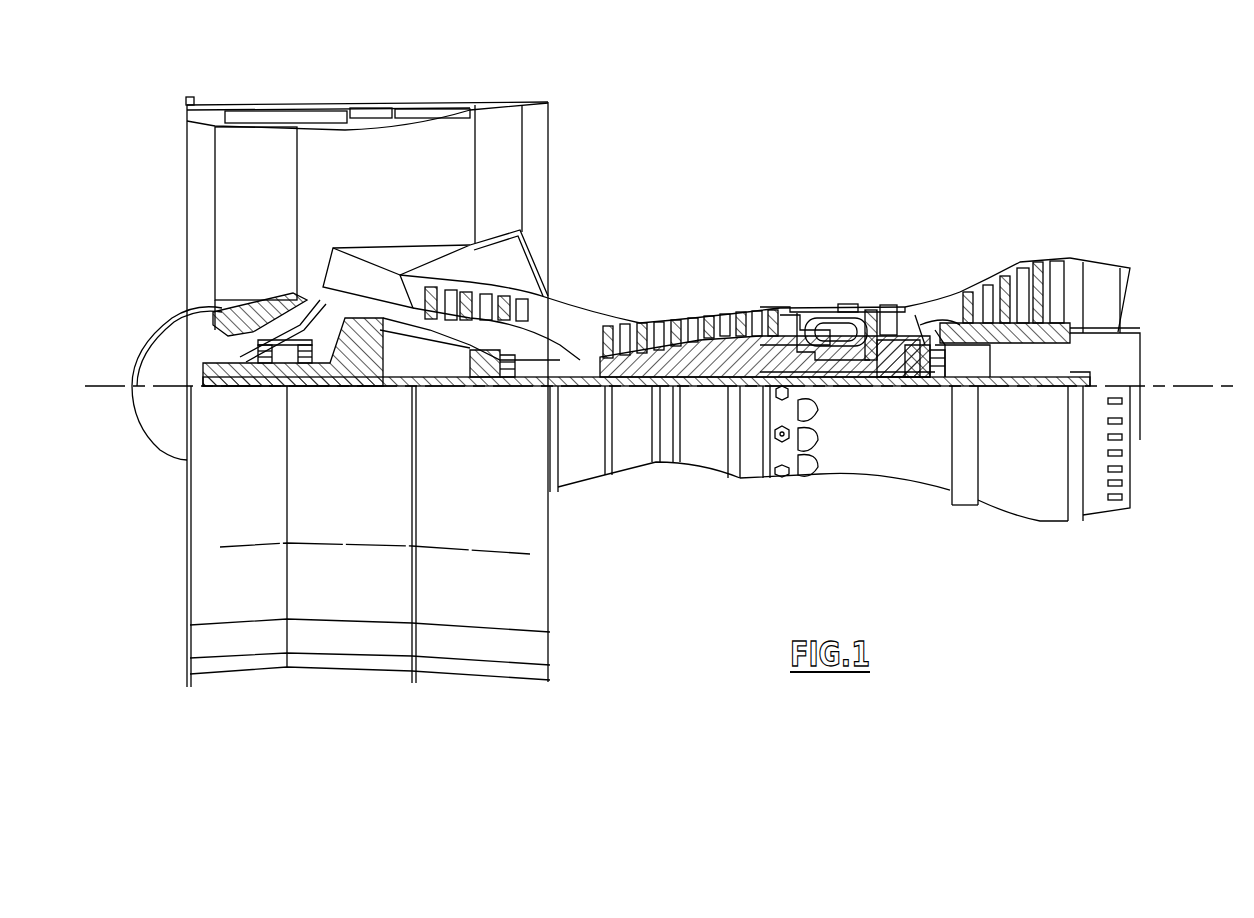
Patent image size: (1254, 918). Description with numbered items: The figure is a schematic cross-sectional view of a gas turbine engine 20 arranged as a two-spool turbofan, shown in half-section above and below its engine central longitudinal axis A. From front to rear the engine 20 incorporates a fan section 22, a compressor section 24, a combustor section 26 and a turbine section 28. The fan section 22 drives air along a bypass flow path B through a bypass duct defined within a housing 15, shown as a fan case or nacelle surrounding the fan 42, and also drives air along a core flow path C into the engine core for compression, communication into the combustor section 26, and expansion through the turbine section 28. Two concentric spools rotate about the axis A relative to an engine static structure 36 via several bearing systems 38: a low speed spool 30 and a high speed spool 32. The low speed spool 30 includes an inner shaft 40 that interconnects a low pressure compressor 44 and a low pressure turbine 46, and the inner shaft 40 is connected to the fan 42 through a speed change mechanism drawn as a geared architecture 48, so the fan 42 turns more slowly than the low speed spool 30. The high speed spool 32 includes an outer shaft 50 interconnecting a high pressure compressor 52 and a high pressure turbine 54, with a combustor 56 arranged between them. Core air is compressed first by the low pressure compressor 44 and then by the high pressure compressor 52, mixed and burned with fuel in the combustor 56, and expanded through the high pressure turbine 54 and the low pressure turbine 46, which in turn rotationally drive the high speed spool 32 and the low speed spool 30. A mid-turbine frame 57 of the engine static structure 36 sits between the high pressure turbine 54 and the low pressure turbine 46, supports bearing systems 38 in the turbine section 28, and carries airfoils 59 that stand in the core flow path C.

The gas turbine engine 20 is at (830, 150).
The fan section 22 is at (298, 92).
The compressor section 24 is at (600, 297).
The combustor section 26 is at (822, 282).
The turbine section 28 is at (968, 247).
The housing 15 is at (370, 110).
The low speed spool 30 is at (707, 394).
The high speed spool 32 is at (750, 340).
The engine static structure 36 is at (748, 478).
The bearing systems 38 is at (512, 380).
The inner shaft 40 is at (573, 388).
The fan 42 is at (270, 231).
The low pressure compressor 44 is at (478, 285).
The low pressure turbine 46 is at (1015, 270).
The geared architecture 48 is at (375, 370).
The outer shaft 50 is at (833, 366).
The high pressure compressor 52 is at (685, 322).
The high pressure turbine 54 is at (890, 317).
The combustor 56 is at (822, 332).
The mid-turbine frame 57 is at (930, 295).
The airfoils 59 is at (960, 357).
The engine central longitudinal axis A is at (1205, 386).
The bypass flow path B is at (330, 178).
The core flow path C is at (368, 283).